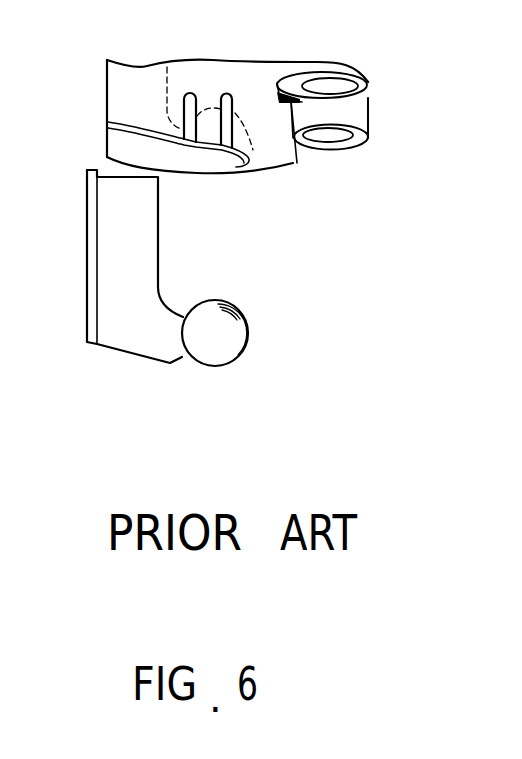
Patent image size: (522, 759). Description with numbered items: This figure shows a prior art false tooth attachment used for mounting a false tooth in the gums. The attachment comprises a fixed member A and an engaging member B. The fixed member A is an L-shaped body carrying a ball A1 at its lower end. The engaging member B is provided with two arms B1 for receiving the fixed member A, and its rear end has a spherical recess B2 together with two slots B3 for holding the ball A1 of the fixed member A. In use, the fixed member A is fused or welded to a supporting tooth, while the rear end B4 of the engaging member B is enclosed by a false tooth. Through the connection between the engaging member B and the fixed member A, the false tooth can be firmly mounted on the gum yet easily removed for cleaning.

The fixed member A is at (147, 348).
The ball A1 is at (228, 331).
The engaging member B is at (268, 147).
The arms B1 is at (118, 83).
The spherical recess B2 is at (202, 160).
The slots B3 is at (193, 96).
The rear end B4 is at (352, 113).